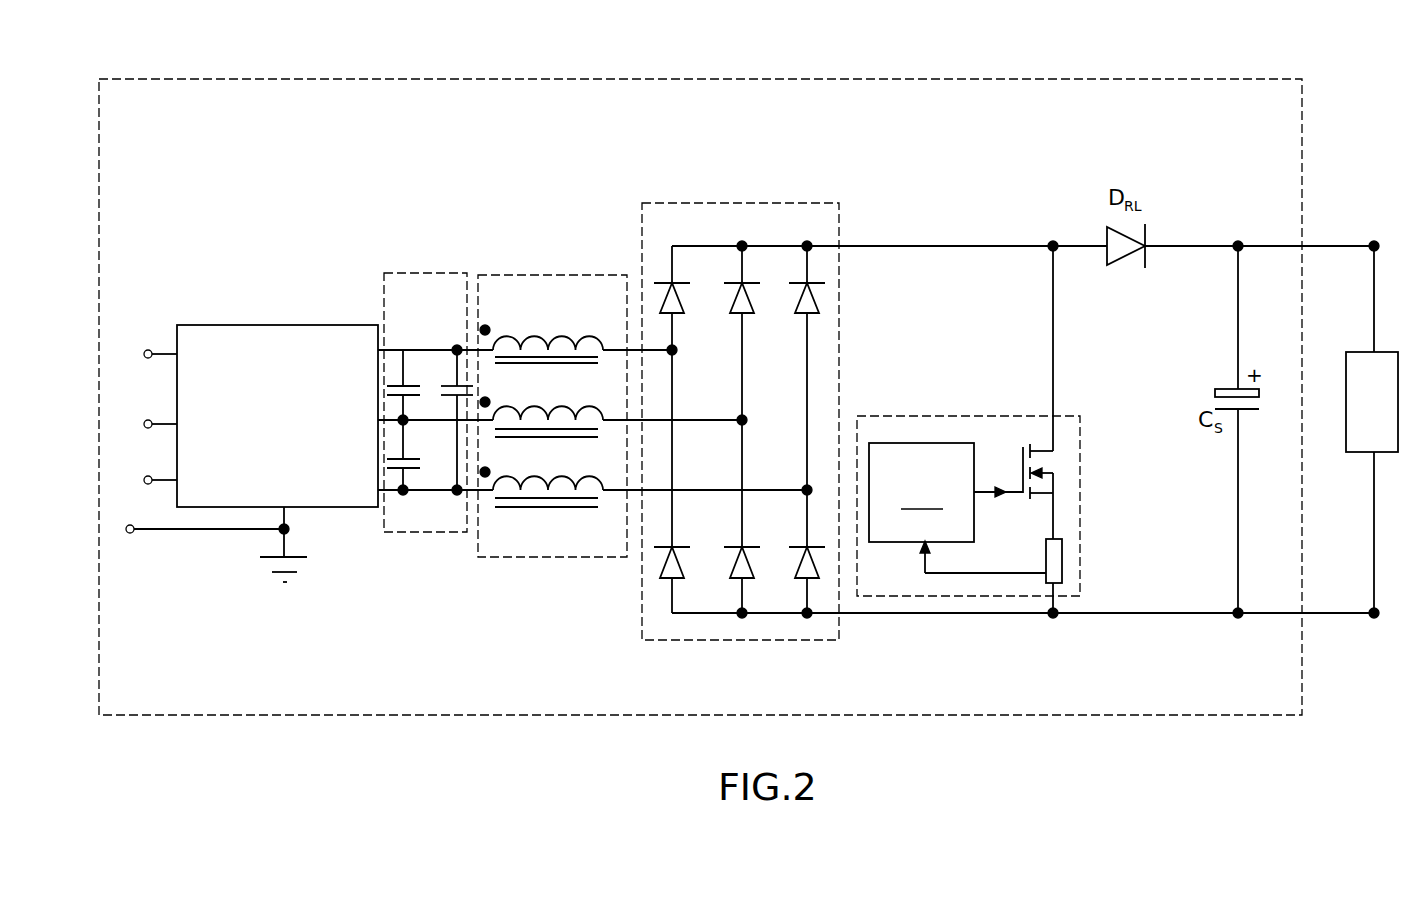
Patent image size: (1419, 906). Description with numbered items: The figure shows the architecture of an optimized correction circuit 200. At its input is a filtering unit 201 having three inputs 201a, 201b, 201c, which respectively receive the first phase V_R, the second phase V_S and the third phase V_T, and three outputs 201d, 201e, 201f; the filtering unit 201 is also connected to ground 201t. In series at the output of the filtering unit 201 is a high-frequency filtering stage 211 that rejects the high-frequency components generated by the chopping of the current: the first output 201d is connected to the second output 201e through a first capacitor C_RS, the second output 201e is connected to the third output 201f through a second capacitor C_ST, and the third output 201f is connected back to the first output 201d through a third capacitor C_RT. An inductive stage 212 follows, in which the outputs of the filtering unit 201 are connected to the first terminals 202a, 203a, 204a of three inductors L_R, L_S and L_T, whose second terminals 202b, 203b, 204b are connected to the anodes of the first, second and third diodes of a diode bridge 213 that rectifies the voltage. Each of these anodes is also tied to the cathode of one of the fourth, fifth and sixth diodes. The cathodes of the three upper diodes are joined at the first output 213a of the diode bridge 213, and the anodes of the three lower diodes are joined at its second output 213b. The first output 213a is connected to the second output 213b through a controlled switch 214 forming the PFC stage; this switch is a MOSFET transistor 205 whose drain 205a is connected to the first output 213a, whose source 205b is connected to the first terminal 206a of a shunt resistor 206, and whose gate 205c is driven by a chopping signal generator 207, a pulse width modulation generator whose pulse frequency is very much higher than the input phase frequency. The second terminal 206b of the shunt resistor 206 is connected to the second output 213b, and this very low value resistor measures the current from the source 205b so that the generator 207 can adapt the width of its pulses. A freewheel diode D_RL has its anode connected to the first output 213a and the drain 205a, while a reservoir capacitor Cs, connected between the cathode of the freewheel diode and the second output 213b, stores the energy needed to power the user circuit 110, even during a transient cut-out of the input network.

The correction circuit 200 is at (533, 79).
The filtering unit 201 is at (248, 325).
The first input 201a is at (175, 352).
The second input 201b is at (175, 422).
The third input 201c is at (175, 479).
The first output 201d is at (385, 349).
The second output 201e is at (377, 422).
The third output 201f is at (380, 492).
The ground 201t is at (283, 550).
The filtering stage 211 is at (437, 273).
The inductive stage 212 is at (585, 273).
The first terminal of first inductor 202a is at (493, 343).
The second terminal of first inductor 202b is at (606, 343).
The first terminal of second inductor 203a is at (517, 397).
The second terminal of second inductor 203b is at (606, 414).
The first terminal of third inductor 204a is at (488, 495).
The second terminal of third inductor 204b is at (613, 495).
The diode bridge 213 is at (702, 203).
The first output of diode bridge 213a is at (845, 246).
The second output of diode bridge 213b is at (842, 613).
The controlled switch 214 is at (963, 416).
The MOSFET transistor 205 is at (1042, 463).
The drain 205a is at (1055, 438).
The source 205b is at (1062, 482).
The gate 205c is at (1007, 500).
The shunt resistor 206 is at (1062, 565).
The first terminal of shunt resistor 206a is at (1062, 537).
The second terminal of shunt resistor 206b is at (1062, 588).
The chopping signal generator 207 is at (921, 492).
The user circuit 110 is at (1346, 393).